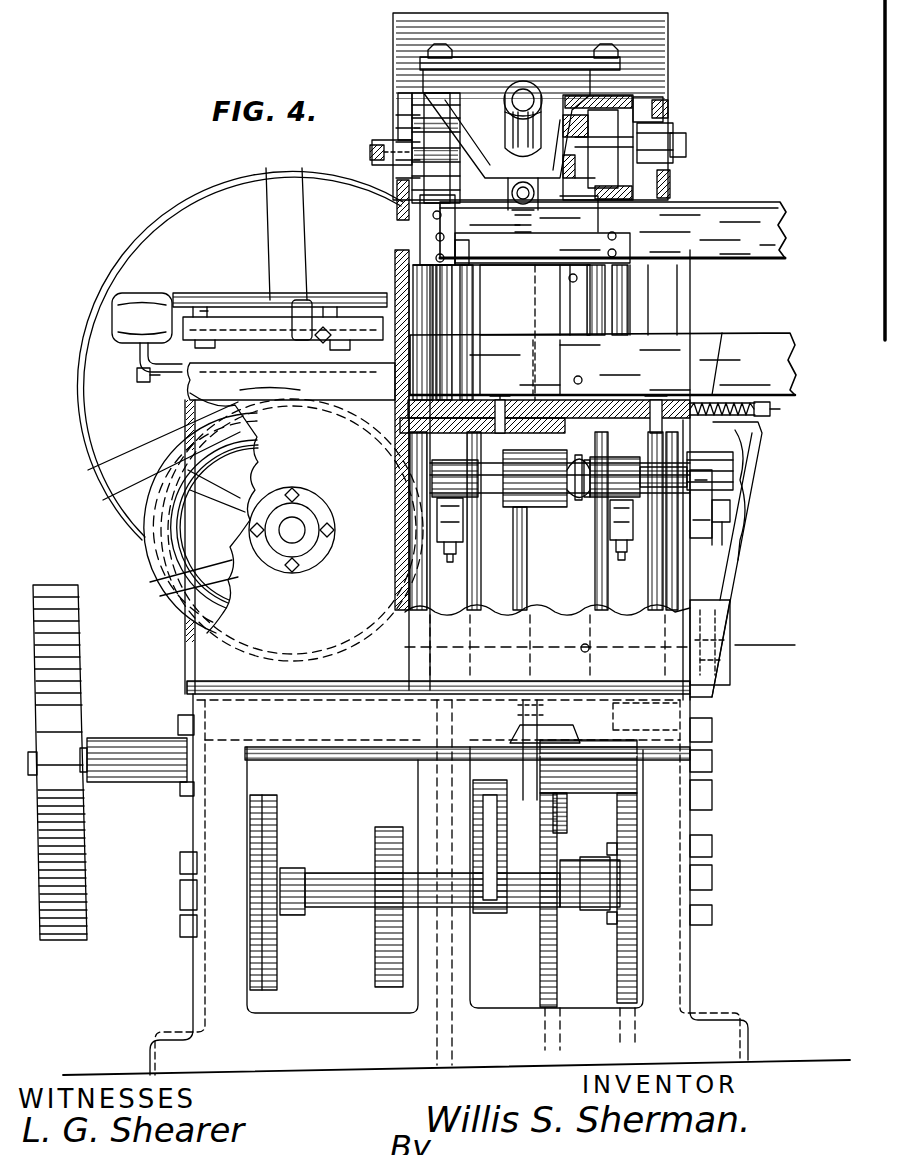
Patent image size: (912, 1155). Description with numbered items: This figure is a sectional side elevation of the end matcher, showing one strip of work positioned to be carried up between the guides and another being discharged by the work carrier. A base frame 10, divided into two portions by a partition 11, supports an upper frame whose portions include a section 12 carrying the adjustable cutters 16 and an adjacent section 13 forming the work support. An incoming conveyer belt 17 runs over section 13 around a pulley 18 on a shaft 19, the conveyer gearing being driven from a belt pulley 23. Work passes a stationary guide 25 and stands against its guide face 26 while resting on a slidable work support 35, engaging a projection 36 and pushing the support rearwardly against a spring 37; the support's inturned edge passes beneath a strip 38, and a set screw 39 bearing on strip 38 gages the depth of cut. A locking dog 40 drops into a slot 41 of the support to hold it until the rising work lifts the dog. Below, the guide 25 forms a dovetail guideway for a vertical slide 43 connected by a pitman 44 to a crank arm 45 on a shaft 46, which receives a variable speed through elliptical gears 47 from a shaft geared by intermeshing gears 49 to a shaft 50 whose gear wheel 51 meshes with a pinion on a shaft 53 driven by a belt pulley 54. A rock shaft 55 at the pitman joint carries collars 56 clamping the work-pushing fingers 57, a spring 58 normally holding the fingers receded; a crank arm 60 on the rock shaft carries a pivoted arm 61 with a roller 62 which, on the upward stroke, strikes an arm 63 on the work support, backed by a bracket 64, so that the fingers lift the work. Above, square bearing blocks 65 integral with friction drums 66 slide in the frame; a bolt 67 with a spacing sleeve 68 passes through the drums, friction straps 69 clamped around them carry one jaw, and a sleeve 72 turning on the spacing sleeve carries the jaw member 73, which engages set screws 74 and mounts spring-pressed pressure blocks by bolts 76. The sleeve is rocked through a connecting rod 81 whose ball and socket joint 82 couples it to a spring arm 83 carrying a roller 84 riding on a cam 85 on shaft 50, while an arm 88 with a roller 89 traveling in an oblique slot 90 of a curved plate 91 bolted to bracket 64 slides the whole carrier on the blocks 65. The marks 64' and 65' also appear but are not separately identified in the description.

The base frame 10 is at (213, 995).
The partition 11 is at (437, 800).
The frame portion 12 is at (215, 672).
The frame section 13 is at (435, 687).
The cutters 16 is at (398, 280).
The incoming conveyer belt 17 is at (758, 470).
The pulley 18 is at (167, 565).
The shaft 19 is at (289, 542).
The belt pulley 23 is at (142, 232).
The stationary guide 25 is at (600, 300).
The stationary guide face 26 is at (560, 312).
The work support 35 is at (722, 333).
The projection 36 is at (395, 384).
The spring 37 is at (727, 393).
The strip 38 is at (640, 397).
The set screw 39 is at (760, 418).
The locking dog 40 is at (478, 352).
The slot or recess 41 is at (485, 400).
The vertical moving slide 43 is at (660, 340).
The pitman 44 is at (527, 593).
The crank arm 45 is at (487, 915).
The shaft 46 is at (337, 897).
The elliptical gears 47 is at (280, 840).
The intermeshing gears 49 is at (387, 947).
The shaft 50 is at (567, 902).
The gear wheel 51 is at (620, 975).
The shaft 53 is at (318, 760).
The belt pulley 54 is at (80, 857).
The rock shaft 55 is at (728, 455).
The collars 56 is at (417, 502).
The fingers 57 is at (447, 306).
The spring 58 is at (585, 503).
The crank arm 60 is at (700, 510).
The arm 61 is at (712, 518).
The roller 62 is at (714, 535).
The arm 63 is at (738, 552).
The bracket 64 is at (558, 386).
The top plate 64' is at (564, 106).
The square bearing blocks 65 is at (404, 148).
The block 65' is at (689, 127).
The friction drums 66 is at (633, 110).
The bolt 67 is at (672, 183).
The spacing sleeve 68 is at (574, 108).
The friction straps 69 is at (372, 152).
The sleeve 72 is at (535, 225).
The jaw member 73 is at (448, 300).
The set screws 74 is at (456, 217).
The bolts 76 is at (455, 245).
The connecting rod 81 is at (520, 378).
The ball and socket joint 82 is at (562, 727).
The spring arm 83 is at (600, 790).
The roller 84 is at (555, 832).
The cam 85 is at (557, 955).
The arm 88 is at (520, 152).
The roller 89 is at (506, 95).
The oblique slot 90 is at (512, 116).
The curved plate 91 is at (465, 70).